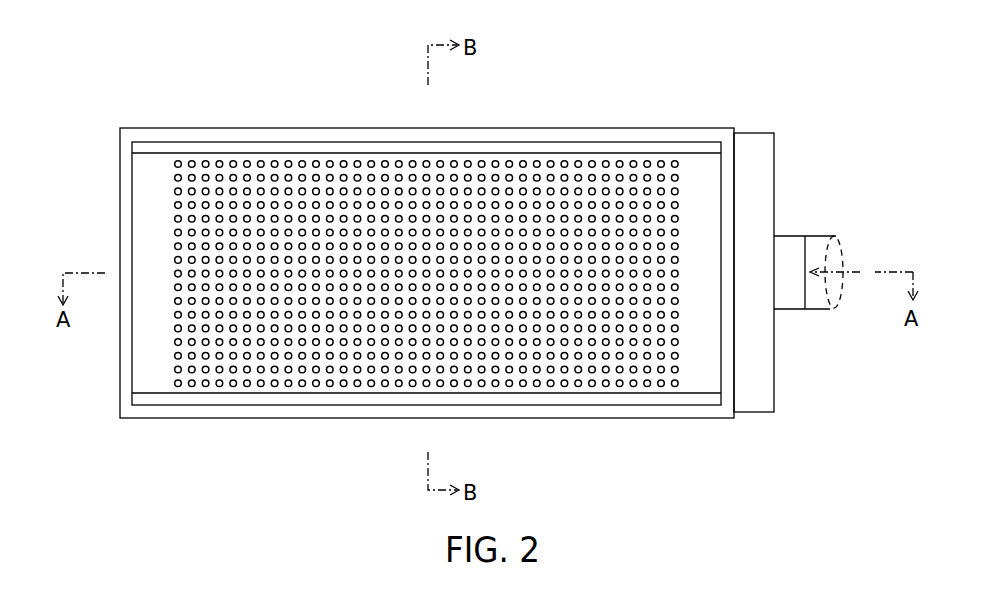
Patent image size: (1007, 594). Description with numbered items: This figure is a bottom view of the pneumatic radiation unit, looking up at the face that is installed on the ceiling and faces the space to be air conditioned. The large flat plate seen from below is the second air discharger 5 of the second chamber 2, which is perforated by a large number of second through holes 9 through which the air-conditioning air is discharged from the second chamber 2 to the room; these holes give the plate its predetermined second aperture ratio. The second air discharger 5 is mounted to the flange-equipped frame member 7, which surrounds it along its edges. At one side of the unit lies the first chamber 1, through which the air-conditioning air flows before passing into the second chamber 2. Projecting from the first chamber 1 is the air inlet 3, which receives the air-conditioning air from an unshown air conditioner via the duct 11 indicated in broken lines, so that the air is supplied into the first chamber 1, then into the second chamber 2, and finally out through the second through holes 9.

The first chamber 1 is at (757, 131).
The second chamber 2 is at (624, 126).
The air inlet 3 is at (805, 250).
The second air discharger 5 is at (656, 167).
The flange-equipped frame member 7 is at (541, 128).
The second through holes 9 is at (291, 200).
The duct 11 is at (831, 311).